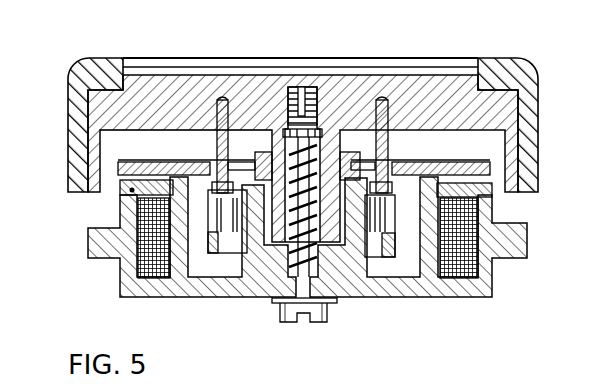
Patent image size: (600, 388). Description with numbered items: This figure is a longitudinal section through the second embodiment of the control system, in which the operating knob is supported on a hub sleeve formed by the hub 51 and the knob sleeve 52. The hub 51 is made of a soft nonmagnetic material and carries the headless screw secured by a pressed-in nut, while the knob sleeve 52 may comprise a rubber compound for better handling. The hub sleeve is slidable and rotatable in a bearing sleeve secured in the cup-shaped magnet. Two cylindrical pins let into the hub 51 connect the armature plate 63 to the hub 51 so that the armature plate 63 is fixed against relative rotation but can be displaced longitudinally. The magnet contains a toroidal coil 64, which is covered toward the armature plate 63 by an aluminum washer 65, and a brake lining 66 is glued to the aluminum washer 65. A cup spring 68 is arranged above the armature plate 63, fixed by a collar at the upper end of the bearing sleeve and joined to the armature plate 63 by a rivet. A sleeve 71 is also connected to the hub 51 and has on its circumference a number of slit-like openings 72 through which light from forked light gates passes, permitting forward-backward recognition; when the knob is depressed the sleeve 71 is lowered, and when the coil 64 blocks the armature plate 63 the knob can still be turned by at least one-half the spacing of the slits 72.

The hub 51 is at (450, 92).
The knob sleeve 52 is at (527, 134).
The armature plate 63 is at (143, 168).
The toroidal coil 64 is at (465, 262).
The aluminum washer 65 is at (132, 190).
The brake lining 66 is at (125, 186).
The cup spring 68 is at (178, 162).
The sleeve 71 is at (384, 104).
The slit-like openings 72 is at (378, 235).